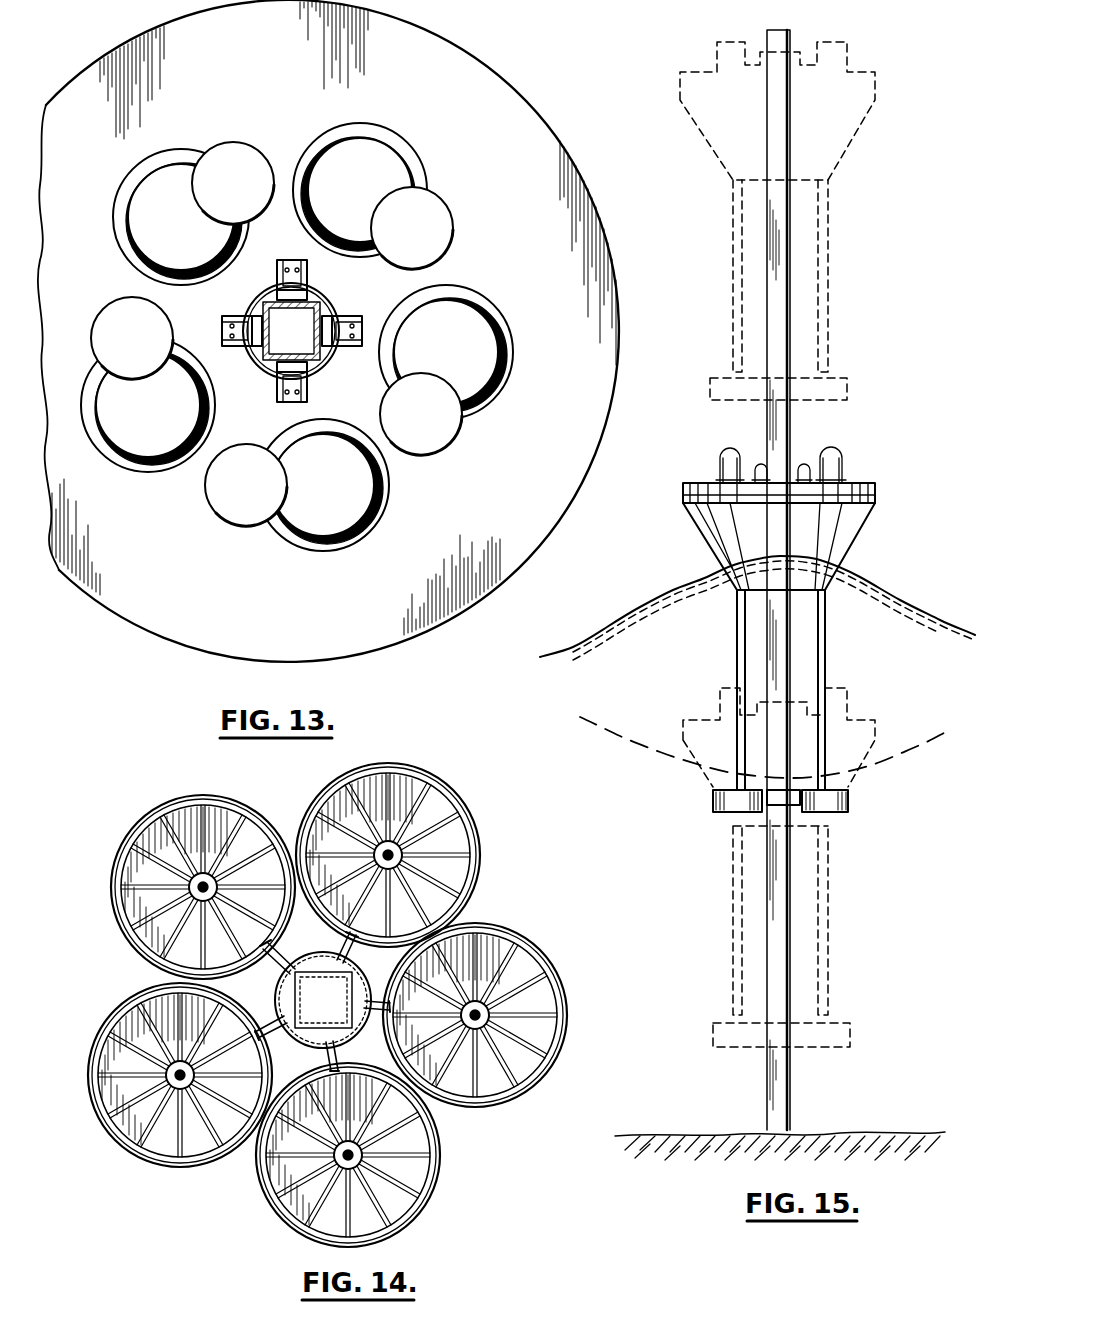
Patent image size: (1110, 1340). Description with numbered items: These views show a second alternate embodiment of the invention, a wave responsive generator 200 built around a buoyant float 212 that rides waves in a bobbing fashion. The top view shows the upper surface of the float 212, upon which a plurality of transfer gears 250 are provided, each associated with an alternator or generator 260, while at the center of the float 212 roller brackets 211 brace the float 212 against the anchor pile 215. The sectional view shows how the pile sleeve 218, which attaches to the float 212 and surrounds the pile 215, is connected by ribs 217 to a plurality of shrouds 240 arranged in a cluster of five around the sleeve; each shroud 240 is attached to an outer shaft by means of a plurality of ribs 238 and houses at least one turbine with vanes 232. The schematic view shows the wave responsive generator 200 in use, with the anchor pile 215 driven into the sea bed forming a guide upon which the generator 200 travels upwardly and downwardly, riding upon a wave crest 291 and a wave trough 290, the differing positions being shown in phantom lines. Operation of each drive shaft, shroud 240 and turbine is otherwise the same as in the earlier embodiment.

In FIG. 13, the wave responsive generator 200 is at (478, 40).
In FIG. 14, the wave responsive generator 200 is at (469, 1152).
In FIG. 15, the wave responsive generator 200 is at (698, 70).
In FIG. 13, the roller brackets 211 is at (330, 308).
In FIG. 13, the buoyant float 212 is at (526, 203).
In FIG. 14, the anchor pile 215 is at (343, 1015).
In FIG. 15, the anchor pile 215 is at (791, 430).
In FIG. 14, the ribs 217 is at (352, 945).
In FIG. 14, the pile sleeve 218 is at (332, 940).
In FIG. 14, the vanes 232 is at (434, 800).
In FIG. 14, the ribs 238 is at (135, 1018).
In FIG. 14, the shrouds 240 is at (300, 798).
In FIG. 13, the transfer gears 250 is at (191, 225).
In FIG. 13, the alternator 260 is at (248, 168).
In FIG. 15, the wave trough 290 is at (758, 767).
In FIG. 15, the wave crest 291 is at (803, 555).